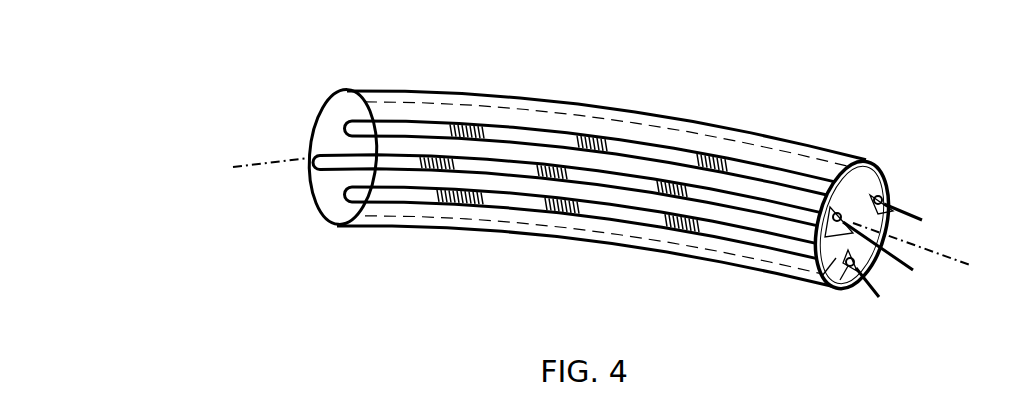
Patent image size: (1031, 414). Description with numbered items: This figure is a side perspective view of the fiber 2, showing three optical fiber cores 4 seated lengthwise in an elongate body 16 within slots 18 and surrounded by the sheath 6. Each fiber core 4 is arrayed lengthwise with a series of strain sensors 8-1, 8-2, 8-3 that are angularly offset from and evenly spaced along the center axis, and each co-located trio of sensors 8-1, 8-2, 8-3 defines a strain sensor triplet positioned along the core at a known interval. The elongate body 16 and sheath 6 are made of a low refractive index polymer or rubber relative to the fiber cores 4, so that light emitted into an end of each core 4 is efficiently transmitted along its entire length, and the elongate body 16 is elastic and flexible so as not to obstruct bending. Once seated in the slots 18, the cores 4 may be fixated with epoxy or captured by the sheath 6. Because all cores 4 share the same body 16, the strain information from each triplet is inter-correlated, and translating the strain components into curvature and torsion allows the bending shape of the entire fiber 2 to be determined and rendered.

The fiber 2 is at (733, 104).
The optical fiber core 4 is at (767, 162).
The sheath 6 is at (866, 168).
The strain sensor 8-1 is at (460, 197).
The strain sensor 8-2 is at (562, 206).
The strain sensor 8-3 is at (682, 223).
The elongate body 16 is at (849, 272).
The slot 18 is at (835, 253).